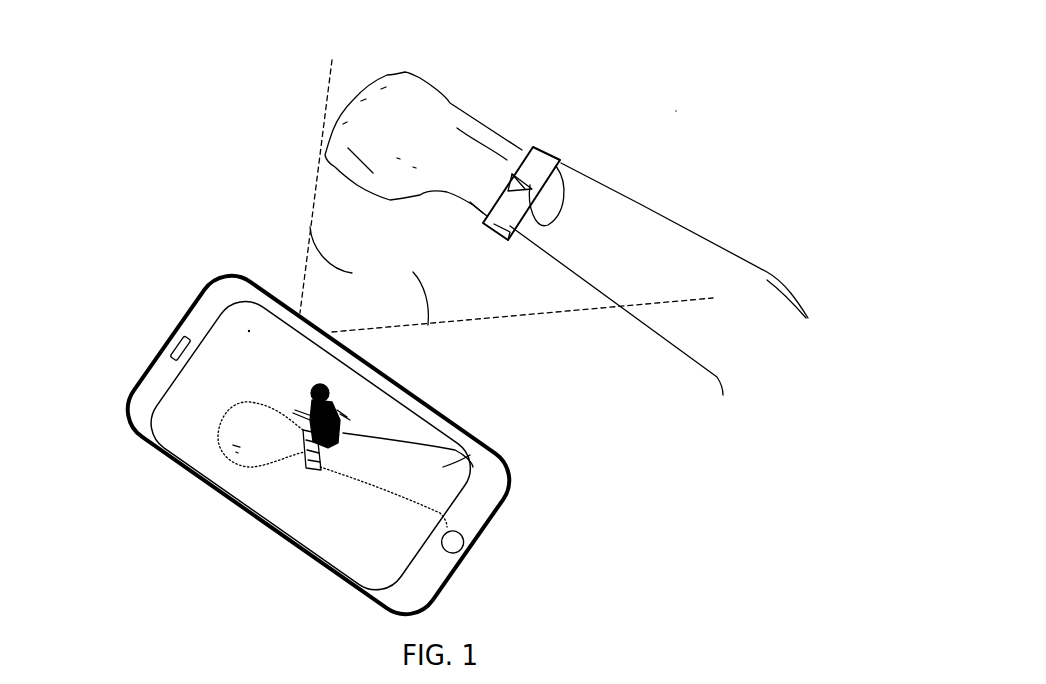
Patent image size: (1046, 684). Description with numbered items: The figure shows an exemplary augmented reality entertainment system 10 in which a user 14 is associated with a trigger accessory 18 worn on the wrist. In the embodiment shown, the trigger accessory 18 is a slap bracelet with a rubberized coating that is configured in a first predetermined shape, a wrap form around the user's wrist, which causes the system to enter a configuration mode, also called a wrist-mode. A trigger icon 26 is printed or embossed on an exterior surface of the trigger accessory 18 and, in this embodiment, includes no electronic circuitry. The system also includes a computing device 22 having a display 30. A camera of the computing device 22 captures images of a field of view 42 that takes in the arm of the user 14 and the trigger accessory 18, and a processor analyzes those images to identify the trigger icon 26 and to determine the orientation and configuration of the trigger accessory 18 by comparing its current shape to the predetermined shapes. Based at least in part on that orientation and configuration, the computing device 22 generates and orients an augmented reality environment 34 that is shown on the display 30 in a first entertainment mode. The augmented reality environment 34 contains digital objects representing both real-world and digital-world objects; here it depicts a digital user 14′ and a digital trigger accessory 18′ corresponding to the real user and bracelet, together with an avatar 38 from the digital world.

The augmented reality entertainment system 10 is at (688, 107).
The user 14 is at (452, 103).
The trigger accessory 18 is at (538, 148).
The trigger icon 26 is at (565, 174).
The computing device 22 is at (167, 343).
The display 30 is at (150, 425).
The augmented reality environment 34 is at (246, 312).
The avatar 38 is at (347, 415).
The field of view 42 is at (506, 196).
The digital user 14′ is at (477, 450).
The digital trigger accessory 18′ is at (314, 471).